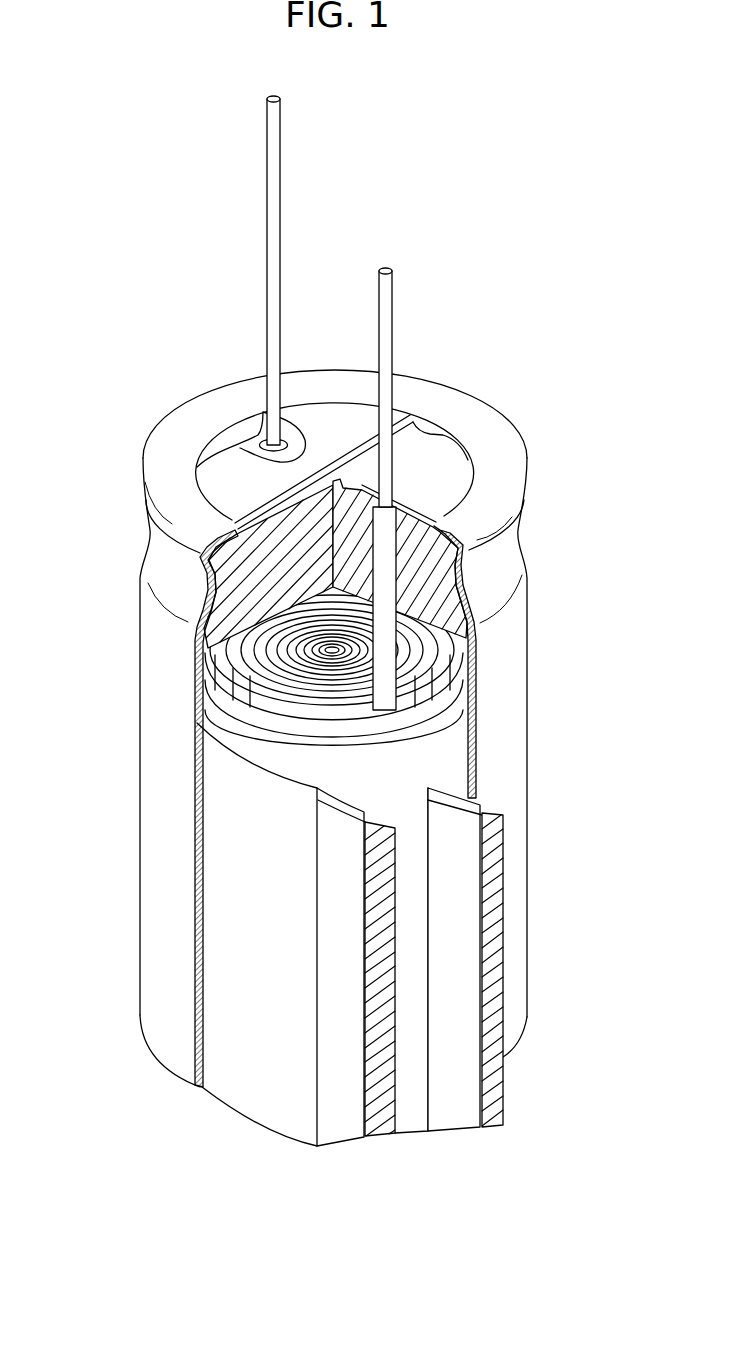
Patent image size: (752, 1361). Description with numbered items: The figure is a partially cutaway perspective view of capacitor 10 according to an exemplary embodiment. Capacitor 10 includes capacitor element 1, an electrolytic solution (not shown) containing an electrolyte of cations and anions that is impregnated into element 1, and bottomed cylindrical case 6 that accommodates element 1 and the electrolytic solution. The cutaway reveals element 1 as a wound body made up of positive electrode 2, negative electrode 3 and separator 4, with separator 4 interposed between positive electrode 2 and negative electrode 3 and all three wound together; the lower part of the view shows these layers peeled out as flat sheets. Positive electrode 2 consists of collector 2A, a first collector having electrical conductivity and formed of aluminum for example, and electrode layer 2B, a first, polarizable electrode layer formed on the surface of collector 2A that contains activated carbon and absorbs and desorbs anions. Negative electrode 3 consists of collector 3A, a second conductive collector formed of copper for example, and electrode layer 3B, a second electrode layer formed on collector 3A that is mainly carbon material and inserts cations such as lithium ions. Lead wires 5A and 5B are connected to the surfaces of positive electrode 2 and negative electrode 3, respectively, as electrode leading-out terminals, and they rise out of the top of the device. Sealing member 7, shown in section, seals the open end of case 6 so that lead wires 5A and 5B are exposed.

The capacitor 10 is at (568, 190).
The capacitor element 1 is at (253, 682).
The positive electrode 2 is at (600, 840).
The collector 2A is at (502, 843).
The electrode layer 2B is at (467, 892).
The negative electrode 3 is at (600, 967).
The collector 3A is at (393, 947).
The electrode layer 3B is at (347, 983).
The separator 4 is at (278, 1113).
The lead wire 5A is at (280, 177).
The lead wire 5B is at (392, 298).
The case 6 is at (517, 613).
The sealing member 7 is at (223, 582).